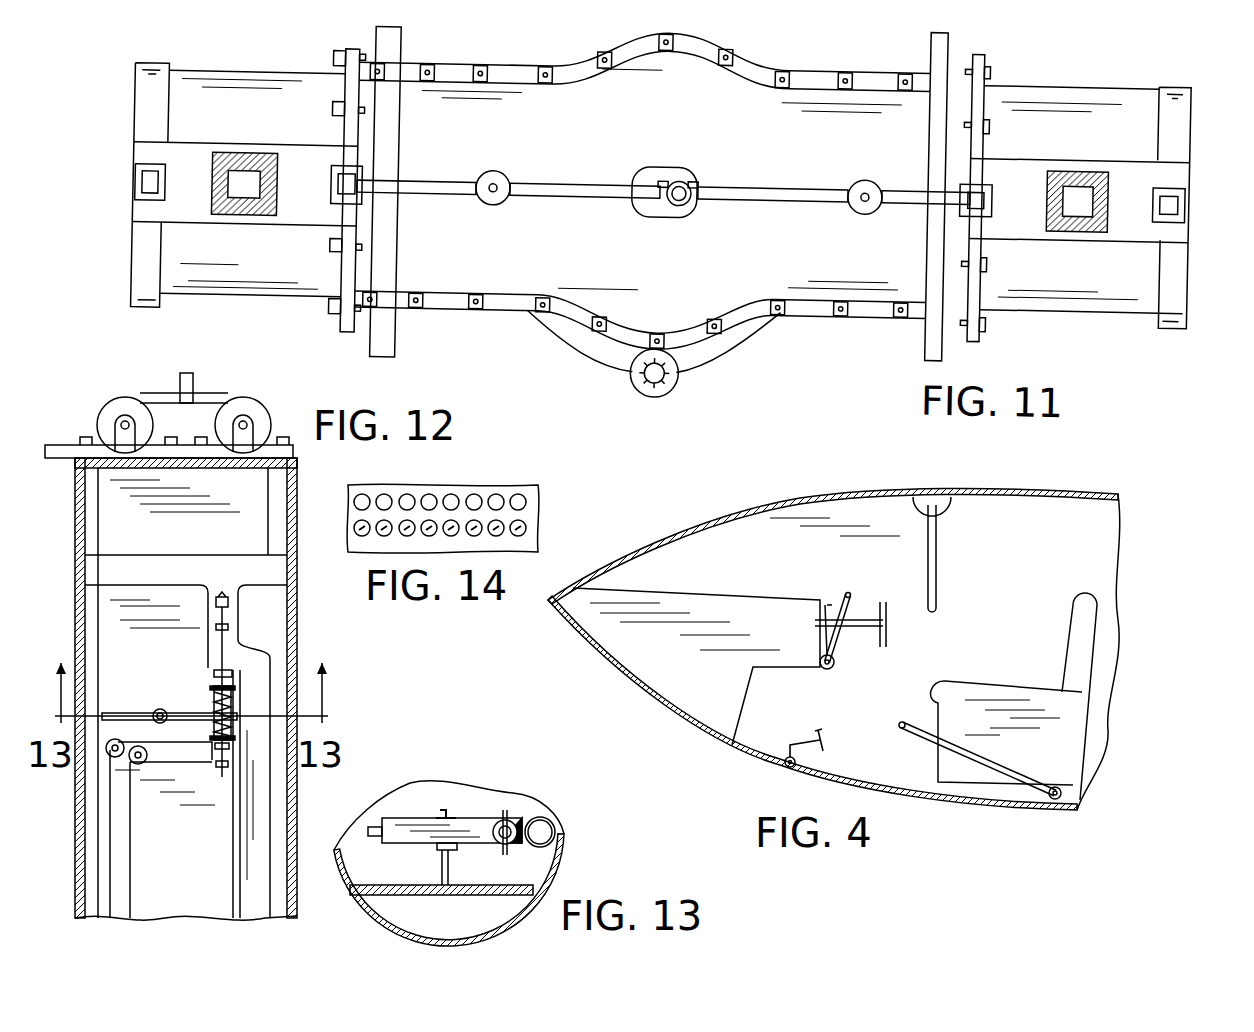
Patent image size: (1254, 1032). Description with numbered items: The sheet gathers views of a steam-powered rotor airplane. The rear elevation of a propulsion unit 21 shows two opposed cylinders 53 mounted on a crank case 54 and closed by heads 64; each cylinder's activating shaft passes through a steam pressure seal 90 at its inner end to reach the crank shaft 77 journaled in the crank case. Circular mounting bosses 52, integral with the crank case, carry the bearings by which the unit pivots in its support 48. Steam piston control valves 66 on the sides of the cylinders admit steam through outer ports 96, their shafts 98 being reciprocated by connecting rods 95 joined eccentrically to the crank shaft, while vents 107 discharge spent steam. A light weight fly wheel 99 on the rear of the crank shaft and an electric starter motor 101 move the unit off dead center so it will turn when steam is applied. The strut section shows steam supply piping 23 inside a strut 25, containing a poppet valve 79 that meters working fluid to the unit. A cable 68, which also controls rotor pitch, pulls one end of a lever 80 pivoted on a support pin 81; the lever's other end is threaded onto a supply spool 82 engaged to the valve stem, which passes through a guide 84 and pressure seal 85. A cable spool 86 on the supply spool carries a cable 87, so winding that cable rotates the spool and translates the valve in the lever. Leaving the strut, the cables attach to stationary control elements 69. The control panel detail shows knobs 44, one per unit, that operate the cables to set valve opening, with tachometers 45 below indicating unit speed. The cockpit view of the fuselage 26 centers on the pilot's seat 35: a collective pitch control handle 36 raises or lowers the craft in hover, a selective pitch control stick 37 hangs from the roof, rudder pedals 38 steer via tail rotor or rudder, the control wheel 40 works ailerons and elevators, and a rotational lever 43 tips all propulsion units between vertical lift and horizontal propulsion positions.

In FIG. 11, the propulsion unit 21 is at (873, 322).
In FIG. 12, the steam supply piping 23 is at (262, 788).
In FIG. 13, the steam supply piping 23 is at (553, 824).
In FIG. 13, the strut 25 is at (565, 852).
In FIG. 4, the fuselage 26 is at (1047, 493).
In FIG. 4, the pilot's seat 35 is at (1080, 622).
In FIG. 4, the collective pitch control handle 36 is at (932, 743).
In FIG. 4, the selective pitch control stick 37 is at (936, 538).
In FIG. 4, the rudder pedals 38 is at (823, 738).
In FIG. 4, the control wheel 40 is at (886, 637).
In FIG. 4, the rotational lever 43 is at (853, 605).
In FIG. 14, the knobs 44 is at (463, 467).
In FIG. 4, the knobs 44 is at (827, 605).
In FIG. 14, the tachometers 45 is at (518, 528).
In FIG. 12, the support 48 is at (75, 450).
In FIG. 11, the circular mounting boss 52 is at (935, 258).
In FIG. 11, the cylinder 53 is at (1027, 106).
In FIG. 11, the crank case 54 is at (702, 49).
In FIG. 11, the head 64 is at (1205, 116).
In FIG. 11, the steam piston control valve 66 is at (223, 236).
In FIG. 12, the cable 68 is at (268, 487).
In FIG. 13, the cable 68 is at (368, 832).
In FIG. 12, the stationary control element 69 is at (193, 380).
In FIG. 11, the crank shaft 77 is at (660, 178).
In FIG. 12, the poppet valve 79 is at (212, 608).
In FIG. 13, the poppet valve 79 is at (515, 822).
In FIG. 12, the lever 80 is at (143, 711).
In FIG. 13, the lever 80 is at (388, 828).
In FIG. 12, the support pin 81 is at (160, 709).
In FIG. 13, the support pin 81 is at (448, 872).
In FIG. 12, the supply spool 82 is at (214, 701).
In FIG. 13, the supply spool 82 is at (500, 820).
In FIG. 12, the guide 84 is at (218, 768).
In FIG. 12, the pressure seal 85 is at (214, 672).
In FIG. 12, the cable spool 86 is at (215, 745).
In FIG. 12, the cable 87 is at (110, 853).
In FIG. 11, the steam pressure seal 90 is at (960, 181).
In FIG. 11, the connecting rod 95 is at (723, 188).
In FIG. 11, the outer port 96 is at (1103, 178).
In FIG. 11, the shaft 98 is at (915, 193).
In FIG. 11, the fly wheel 99 is at (712, 349).
In FIG. 11, the electric starter motor 101 is at (640, 375).
In FIG. 11, the vent 107 is at (1183, 182).